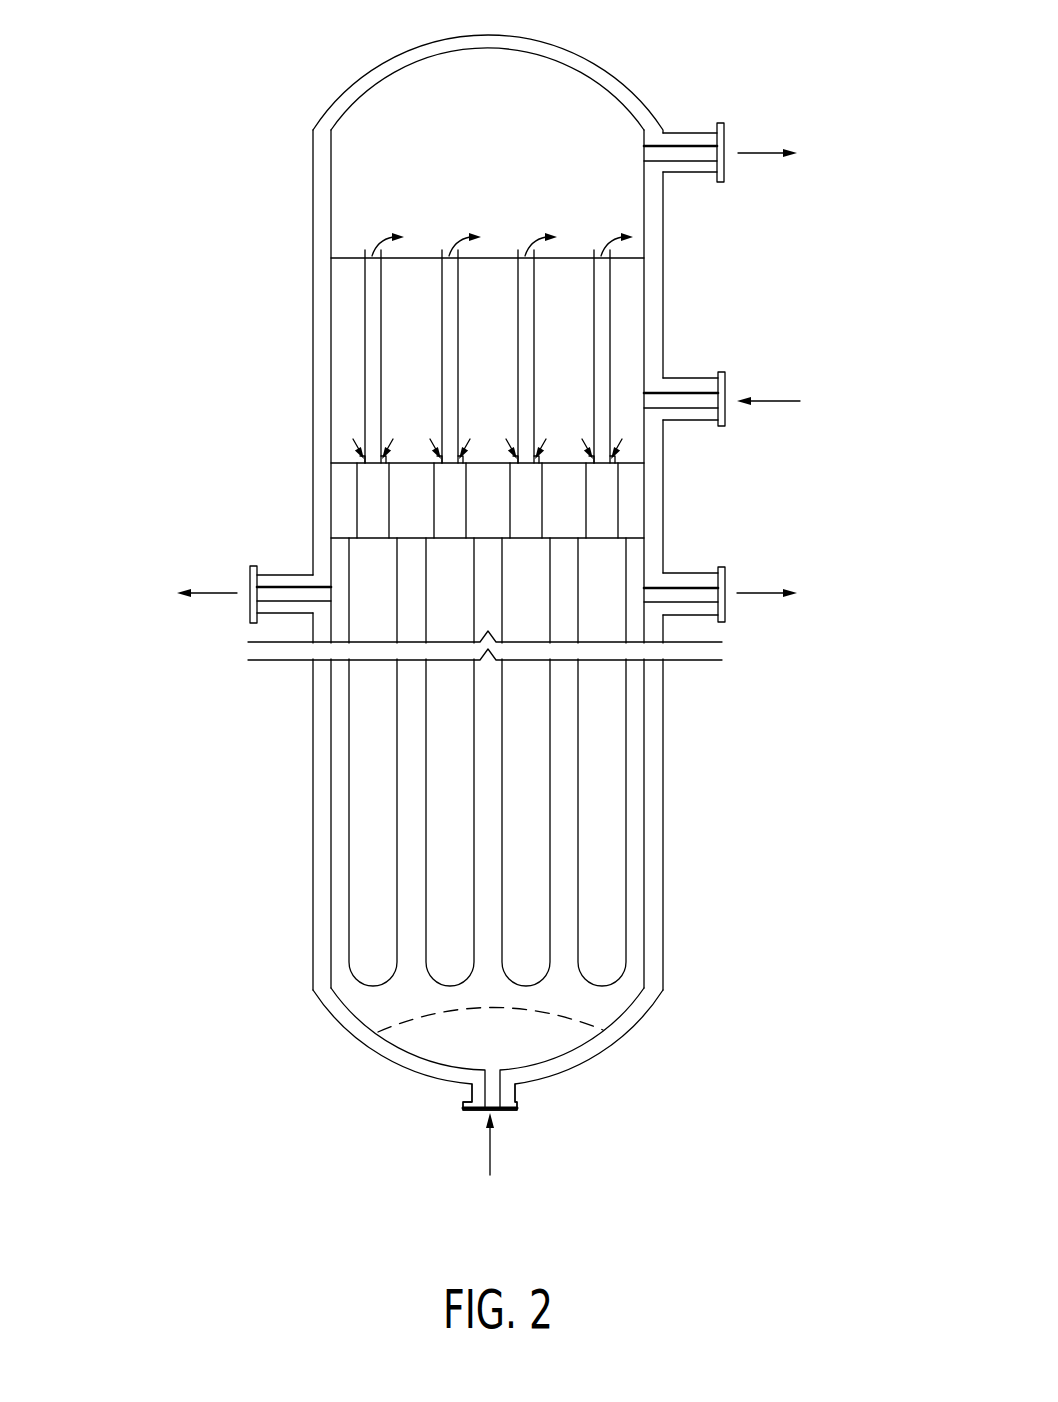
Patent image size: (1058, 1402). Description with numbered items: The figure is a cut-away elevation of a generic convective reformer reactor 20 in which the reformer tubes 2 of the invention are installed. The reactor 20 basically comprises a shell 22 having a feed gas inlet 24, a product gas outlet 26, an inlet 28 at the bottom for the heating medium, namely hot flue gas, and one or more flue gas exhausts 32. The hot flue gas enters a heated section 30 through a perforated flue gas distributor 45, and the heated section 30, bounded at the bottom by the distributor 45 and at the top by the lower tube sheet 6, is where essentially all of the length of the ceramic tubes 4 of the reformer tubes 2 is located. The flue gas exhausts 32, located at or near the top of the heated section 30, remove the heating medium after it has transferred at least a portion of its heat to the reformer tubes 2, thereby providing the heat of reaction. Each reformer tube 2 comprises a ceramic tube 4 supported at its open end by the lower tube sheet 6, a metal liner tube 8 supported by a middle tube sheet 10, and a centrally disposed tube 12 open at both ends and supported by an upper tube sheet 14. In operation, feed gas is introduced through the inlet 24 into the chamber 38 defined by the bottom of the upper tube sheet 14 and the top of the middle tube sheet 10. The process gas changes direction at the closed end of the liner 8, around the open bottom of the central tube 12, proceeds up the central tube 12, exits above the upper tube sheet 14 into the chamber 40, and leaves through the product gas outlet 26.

The reformer tube 2 is at (390, 699).
The ceramic tube 4 is at (627, 860).
The lower tube sheet 6 is at (340, 534).
The metal liner tube 8 is at (618, 505).
The middle tube sheet 10 is at (340, 462).
The centrally disposed tube 12 is at (608, 327).
The upper tube sheet 14 is at (343, 256).
The reformer reactor 20 is at (766, 946).
The shell 22 is at (313, 866).
The feed gas inlet 24 is at (668, 401).
The product gas outlet 26 is at (662, 152).
The inlet 28 is at (484, 1090).
The heated section 30 is at (343, 709).
The flue gas exhaust 32 is at (717, 590).
The chamber 38 is at (343, 368).
The chamber 40 is at (420, 98).
The perforated flue gas distributor 45 is at (575, 1017).